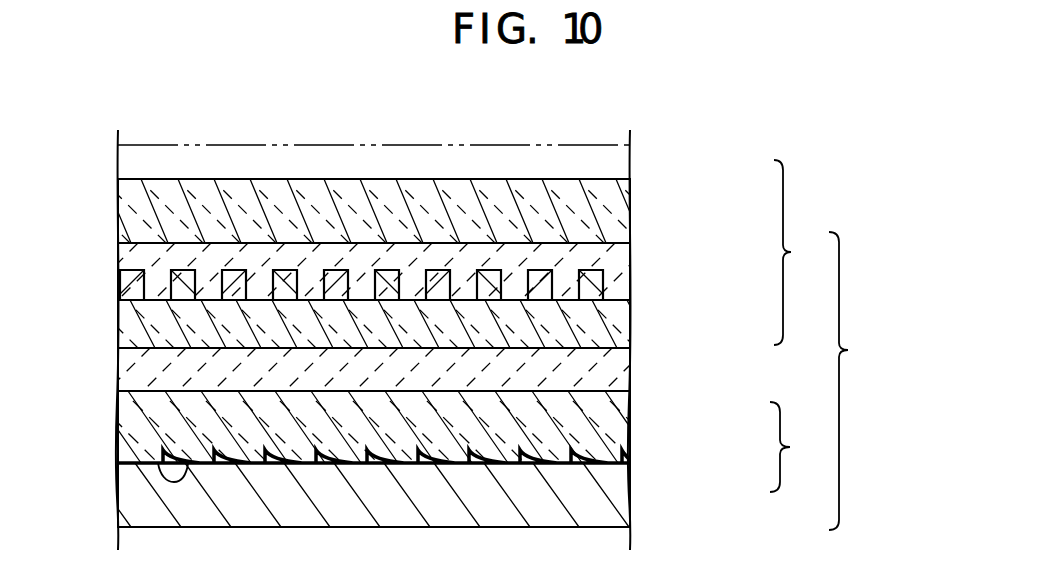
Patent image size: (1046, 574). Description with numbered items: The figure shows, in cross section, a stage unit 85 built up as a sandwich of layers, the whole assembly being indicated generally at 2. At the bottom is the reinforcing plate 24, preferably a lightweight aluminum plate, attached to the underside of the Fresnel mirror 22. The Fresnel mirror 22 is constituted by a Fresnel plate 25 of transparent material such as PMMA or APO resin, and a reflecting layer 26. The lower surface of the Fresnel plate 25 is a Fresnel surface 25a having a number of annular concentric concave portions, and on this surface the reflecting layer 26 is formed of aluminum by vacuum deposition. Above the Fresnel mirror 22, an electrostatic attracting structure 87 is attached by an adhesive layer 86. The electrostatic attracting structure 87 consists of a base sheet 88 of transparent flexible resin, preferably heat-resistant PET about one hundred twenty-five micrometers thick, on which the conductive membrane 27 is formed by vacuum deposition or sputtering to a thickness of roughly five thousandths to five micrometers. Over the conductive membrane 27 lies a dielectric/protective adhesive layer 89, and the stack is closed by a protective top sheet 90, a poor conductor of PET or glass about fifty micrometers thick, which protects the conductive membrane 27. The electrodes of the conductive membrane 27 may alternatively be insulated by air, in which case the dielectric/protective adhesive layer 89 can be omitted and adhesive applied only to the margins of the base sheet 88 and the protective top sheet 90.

The optical recording medium 2 is at (414, 145).
The Fresnel mirror 22 is at (804, 447).
The reinforcing plate 24 is at (625, 512).
The Fresnel plate 25 is at (612, 418).
The Fresnel surface 25a is at (152, 462).
The reflecting layer 26 is at (578, 462).
The conductive membrane 27 is at (608, 283).
The stage unit 85 is at (863, 381).
The adhesive layer 86 is at (612, 372).
The electrostatic attracting structure 87 is at (806, 252).
The base sheet 88 is at (612, 325).
The dielectric/protective adhesive layer 89 is at (612, 258).
The protective top sheet 90 is at (612, 205).